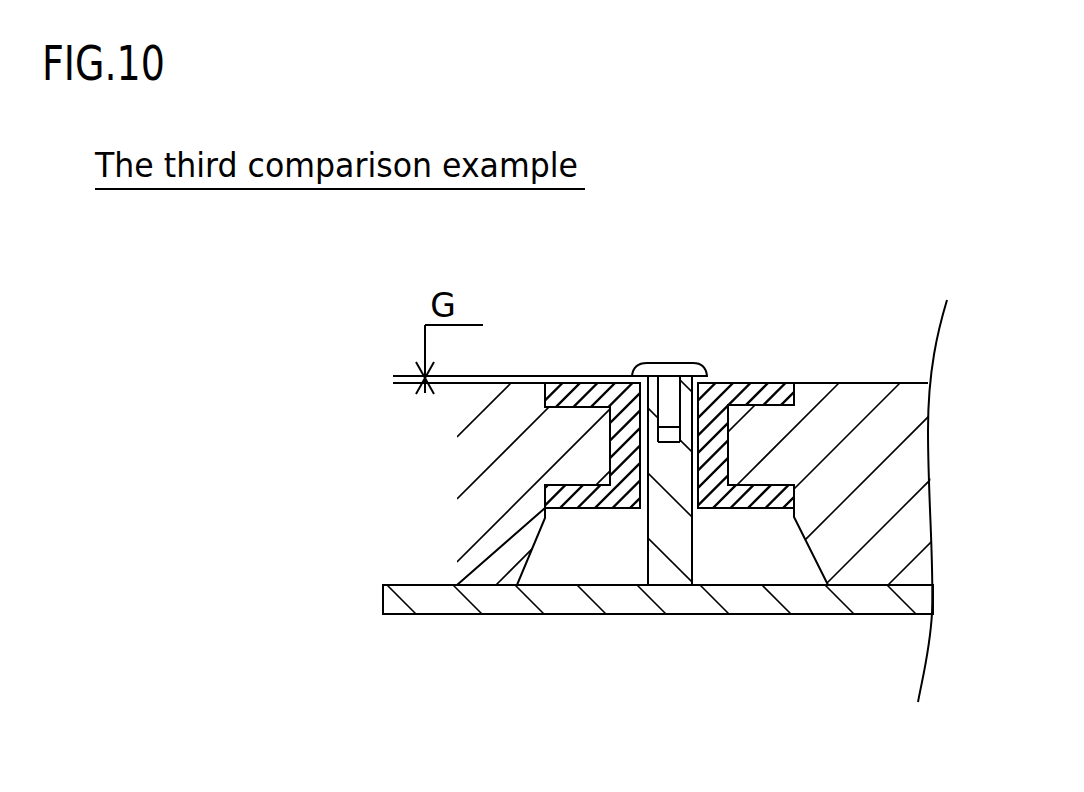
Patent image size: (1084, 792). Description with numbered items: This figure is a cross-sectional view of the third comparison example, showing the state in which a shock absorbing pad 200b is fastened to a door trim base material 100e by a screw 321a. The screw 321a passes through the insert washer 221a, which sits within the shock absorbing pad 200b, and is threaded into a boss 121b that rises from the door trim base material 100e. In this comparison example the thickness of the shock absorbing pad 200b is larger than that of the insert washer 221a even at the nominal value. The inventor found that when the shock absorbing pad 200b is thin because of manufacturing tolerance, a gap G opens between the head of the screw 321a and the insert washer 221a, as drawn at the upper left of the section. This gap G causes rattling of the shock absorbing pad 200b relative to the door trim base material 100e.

The shock absorbing pad 200b is at (511, 384).
The insert washer 221a is at (742, 383).
The screw 321a is at (653, 363).
The boss 121b is at (648, 538).
The door trim base material 100e is at (383, 600).